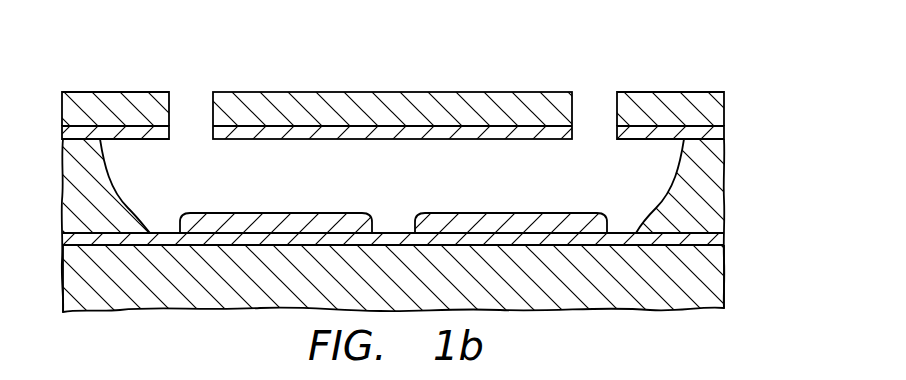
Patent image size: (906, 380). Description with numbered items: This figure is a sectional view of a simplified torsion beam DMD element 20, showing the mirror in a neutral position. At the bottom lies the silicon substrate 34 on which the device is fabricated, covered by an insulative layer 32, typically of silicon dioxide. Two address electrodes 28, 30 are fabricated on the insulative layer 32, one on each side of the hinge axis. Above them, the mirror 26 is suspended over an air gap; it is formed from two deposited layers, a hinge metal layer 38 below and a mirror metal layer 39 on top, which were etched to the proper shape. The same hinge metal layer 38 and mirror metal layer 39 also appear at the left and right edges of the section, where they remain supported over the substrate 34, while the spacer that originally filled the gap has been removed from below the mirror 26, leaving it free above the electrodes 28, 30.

The torsion beam DMD element 20 is at (585, 63).
The mirror 26 is at (393, 92).
The address electrode 28 is at (277, 212).
The address electrode 30 is at (515, 213).
The insulative layer 32 is at (719, 240).
The silicon substrate 34 is at (719, 281).
The hinge metal layer 38 is at (722, 132).
The mirror metal layer 39 is at (725, 97).